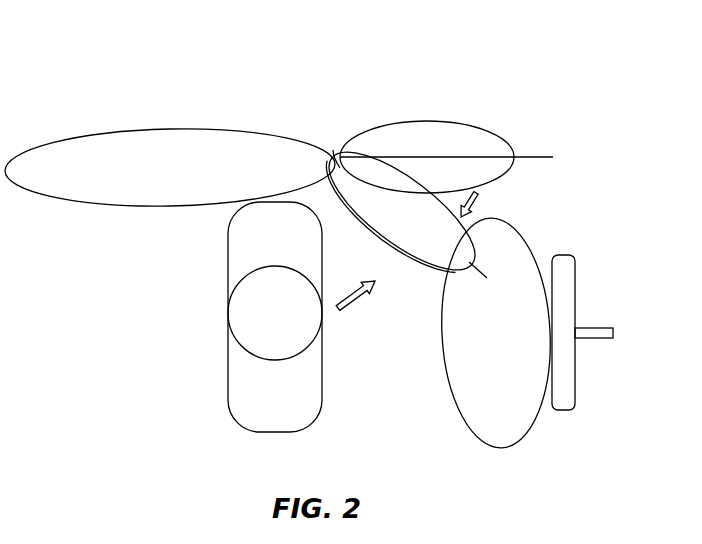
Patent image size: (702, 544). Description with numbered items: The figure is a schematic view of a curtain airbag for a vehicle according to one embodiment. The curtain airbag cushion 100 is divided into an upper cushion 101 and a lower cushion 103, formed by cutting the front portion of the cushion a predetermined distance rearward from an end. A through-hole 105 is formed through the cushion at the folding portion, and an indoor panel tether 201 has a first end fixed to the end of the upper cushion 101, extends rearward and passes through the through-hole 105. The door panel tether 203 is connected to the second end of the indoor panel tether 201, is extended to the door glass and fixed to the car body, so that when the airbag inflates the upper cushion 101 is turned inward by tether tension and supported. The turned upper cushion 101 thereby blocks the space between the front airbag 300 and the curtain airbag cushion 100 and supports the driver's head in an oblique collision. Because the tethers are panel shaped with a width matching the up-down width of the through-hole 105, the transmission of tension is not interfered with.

The curtain airbag cushion 100 is at (200, 108).
The upper cushion 101 is at (420, 238).
The lower cushion 103 is at (468, 133).
The through-hole 105 is at (333, 160).
The indoor panel tether 201 is at (390, 245).
The door panel tether 203 is at (395, 157).
The front airbag 300 is at (518, 238).